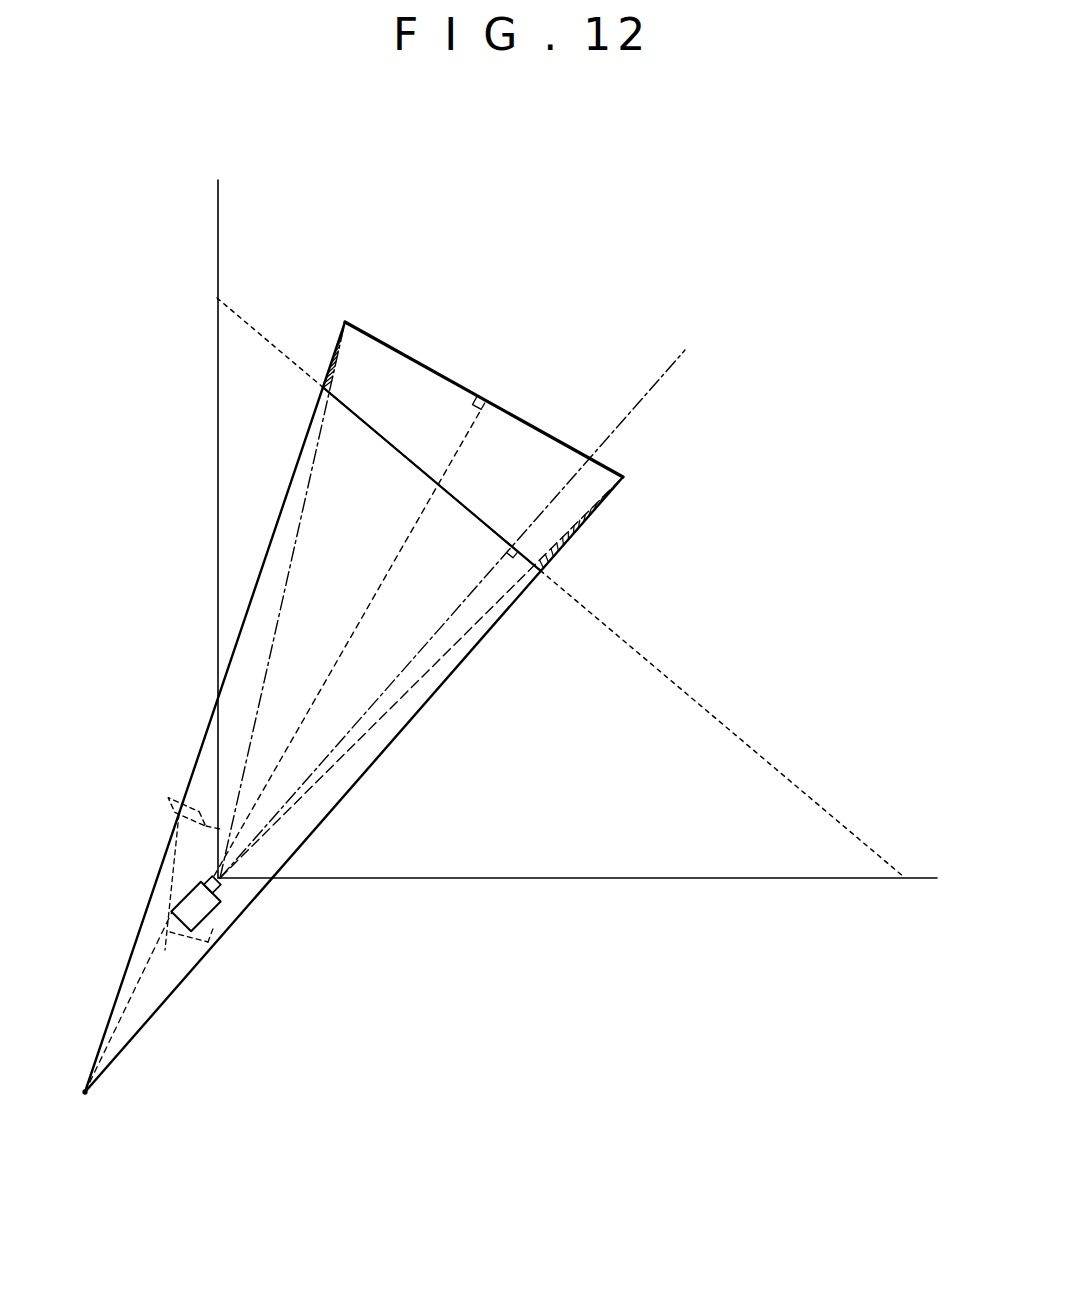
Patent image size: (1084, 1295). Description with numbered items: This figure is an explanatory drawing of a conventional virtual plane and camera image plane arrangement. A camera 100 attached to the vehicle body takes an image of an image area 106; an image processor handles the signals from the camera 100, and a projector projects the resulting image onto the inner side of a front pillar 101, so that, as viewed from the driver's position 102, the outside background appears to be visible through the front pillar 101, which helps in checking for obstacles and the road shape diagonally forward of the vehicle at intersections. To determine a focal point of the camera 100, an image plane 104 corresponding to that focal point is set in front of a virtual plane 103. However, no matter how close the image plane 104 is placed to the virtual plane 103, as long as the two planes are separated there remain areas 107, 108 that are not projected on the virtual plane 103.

The camera 100 is at (206, 938).
The front pillar 101 is at (190, 806).
The driver's position 102 is at (86, 1098).
The virtual plane 103 is at (447, 378).
The image plane 104 is at (387, 440).
The image area 106 is at (607, 782).
The area not projected on the virtual plane 107 is at (330, 360).
The area not projected on the virtual plane 108 is at (586, 524).